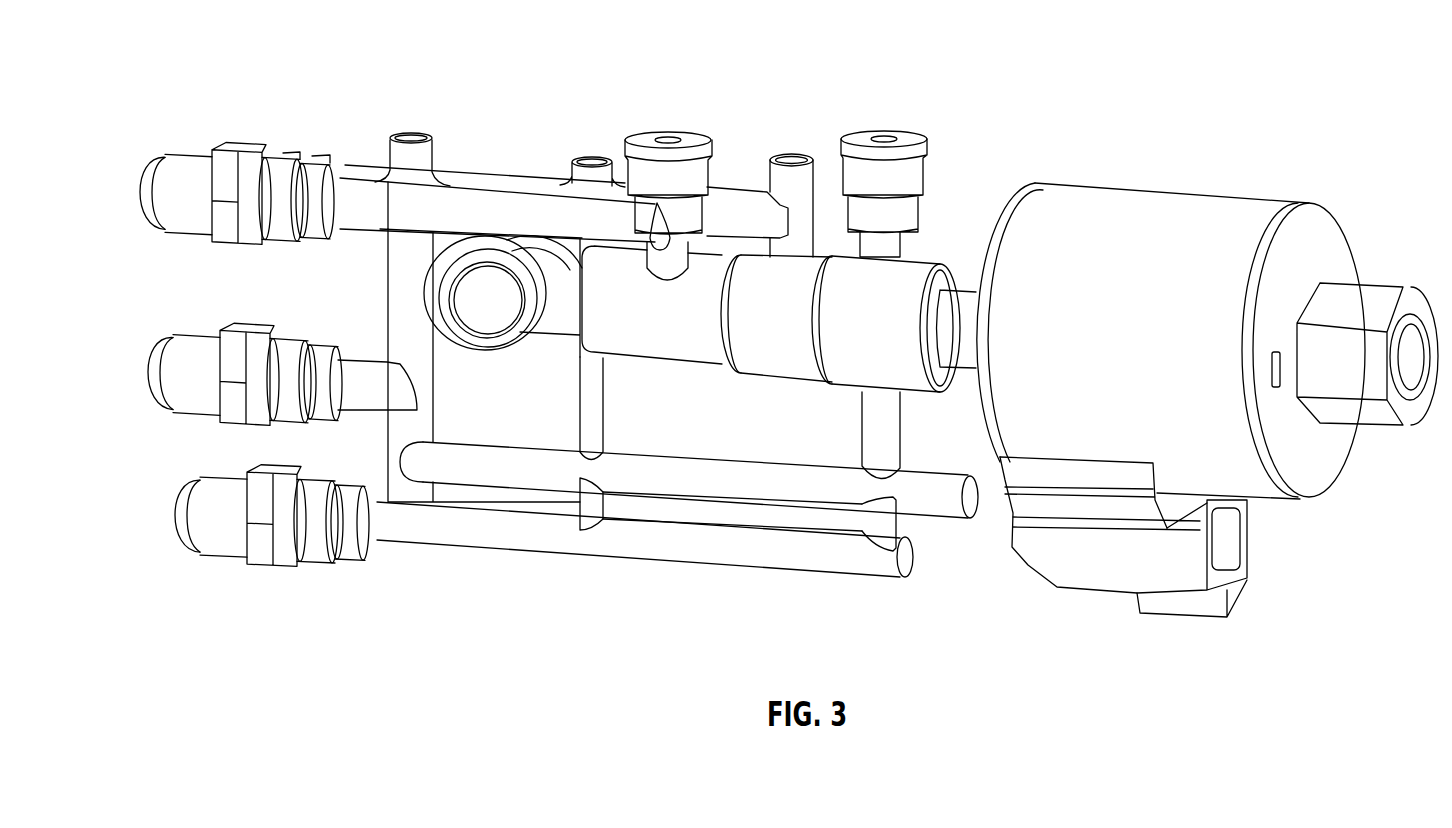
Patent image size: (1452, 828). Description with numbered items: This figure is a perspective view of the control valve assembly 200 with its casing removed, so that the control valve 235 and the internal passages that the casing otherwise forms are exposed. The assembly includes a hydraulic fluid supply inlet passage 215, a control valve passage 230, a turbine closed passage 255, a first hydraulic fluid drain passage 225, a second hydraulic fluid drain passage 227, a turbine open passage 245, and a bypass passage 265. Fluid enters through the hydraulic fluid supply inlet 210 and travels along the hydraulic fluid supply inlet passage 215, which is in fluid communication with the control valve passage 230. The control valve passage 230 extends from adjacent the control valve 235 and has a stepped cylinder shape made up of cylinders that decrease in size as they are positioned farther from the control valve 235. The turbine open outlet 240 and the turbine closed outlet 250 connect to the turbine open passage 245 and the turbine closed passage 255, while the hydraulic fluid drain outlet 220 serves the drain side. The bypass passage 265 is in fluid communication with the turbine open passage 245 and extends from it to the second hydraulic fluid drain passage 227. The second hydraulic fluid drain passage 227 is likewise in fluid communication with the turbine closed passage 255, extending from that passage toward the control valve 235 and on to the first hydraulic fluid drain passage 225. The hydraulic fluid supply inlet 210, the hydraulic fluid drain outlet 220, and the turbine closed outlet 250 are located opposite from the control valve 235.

The control valve assembly 200 is at (600, 84).
The hydraulic fluid supply inlet 210 is at (180, 160).
The hydraulic fluid supply inlet passage 215 is at (437, 210).
The hydraulic fluid drain outlet 220 is at (215, 490).
The first hydraulic fluid drain passage 225 is at (893, 243).
The second hydraulic fluid drain passage 227 is at (800, 490).
The control valve passage 230 is at (848, 353).
The control valve 235 is at (1160, 207).
The turbine open outlet 240 is at (442, 302).
The turbine open passage 245 is at (560, 325).
The turbine closed outlet 250 is at (190, 347).
The turbine closed passage 255 is at (512, 176).
The bypass passage 265 is at (593, 405).